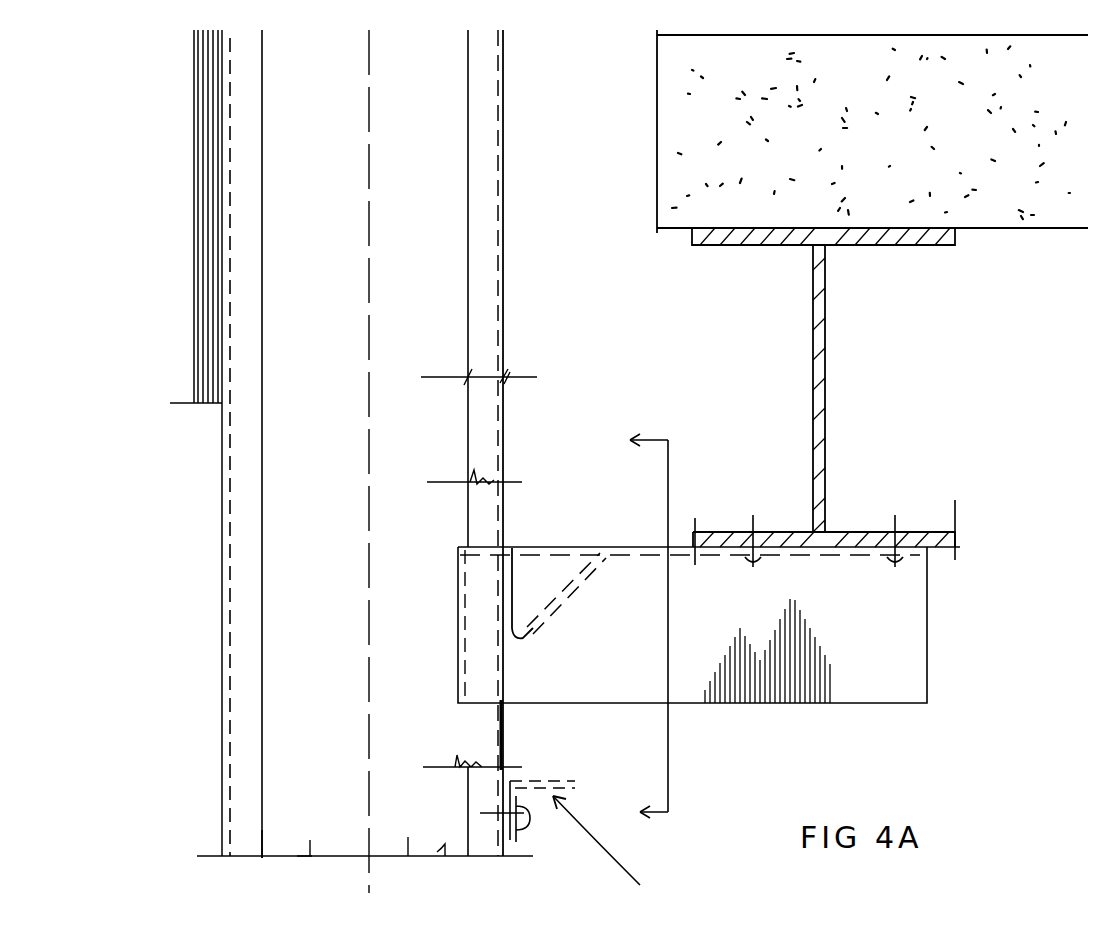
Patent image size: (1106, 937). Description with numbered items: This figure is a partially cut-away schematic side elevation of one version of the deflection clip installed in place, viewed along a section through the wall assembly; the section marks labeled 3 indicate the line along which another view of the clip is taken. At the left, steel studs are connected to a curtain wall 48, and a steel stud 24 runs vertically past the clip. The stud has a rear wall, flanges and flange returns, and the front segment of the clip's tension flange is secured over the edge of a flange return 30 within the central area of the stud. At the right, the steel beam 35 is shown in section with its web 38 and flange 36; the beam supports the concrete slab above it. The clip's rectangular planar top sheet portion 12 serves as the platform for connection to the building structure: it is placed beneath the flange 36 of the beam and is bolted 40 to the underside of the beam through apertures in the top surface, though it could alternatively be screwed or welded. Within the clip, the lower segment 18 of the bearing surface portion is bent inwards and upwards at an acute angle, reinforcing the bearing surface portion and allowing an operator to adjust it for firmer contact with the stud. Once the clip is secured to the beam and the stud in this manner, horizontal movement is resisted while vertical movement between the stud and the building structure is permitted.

The section line of FIG. 3 is at (631, 634).
The planar top sheet portion 12 is at (558, 547).
The lower segment 18 is at (562, 602).
The steel stud 24 is at (512, 222).
The flange return 30 is at (485, 424).
The steel beam 35 is at (824, 387).
The flange 36 is at (855, 540).
The web 38 is at (822, 437).
The bolt 40 is at (766, 570).
The curtain wall 48 is at (186, 351).